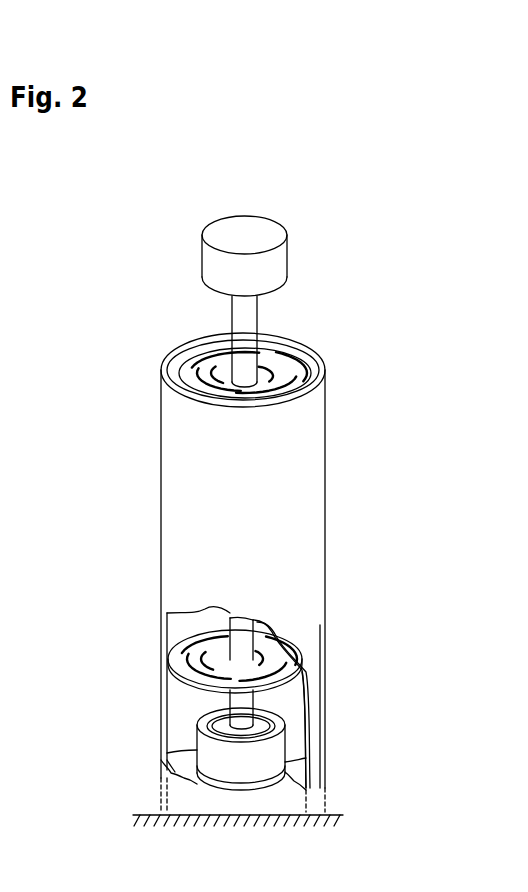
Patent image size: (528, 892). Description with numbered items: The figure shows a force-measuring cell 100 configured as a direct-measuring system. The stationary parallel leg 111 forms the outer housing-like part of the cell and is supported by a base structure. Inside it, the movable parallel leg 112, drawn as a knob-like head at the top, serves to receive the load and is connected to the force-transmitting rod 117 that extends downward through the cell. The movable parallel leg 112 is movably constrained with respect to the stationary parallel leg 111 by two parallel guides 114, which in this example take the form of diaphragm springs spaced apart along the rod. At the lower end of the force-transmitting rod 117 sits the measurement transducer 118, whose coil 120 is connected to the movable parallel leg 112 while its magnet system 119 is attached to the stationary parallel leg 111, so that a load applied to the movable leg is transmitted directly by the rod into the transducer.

The force-measuring cell 100 is at (257, 147).
The stationary parallel leg 111 is at (325, 570).
The movable parallel leg 112 is at (287, 262).
The parallel guides 114 is at (193, 380).
The force-transmitting rod 117 is at (257, 325).
The measurement transducer 118 is at (297, 742).
The magnet system 119 is at (292, 762).
The coil 120 is at (217, 723).